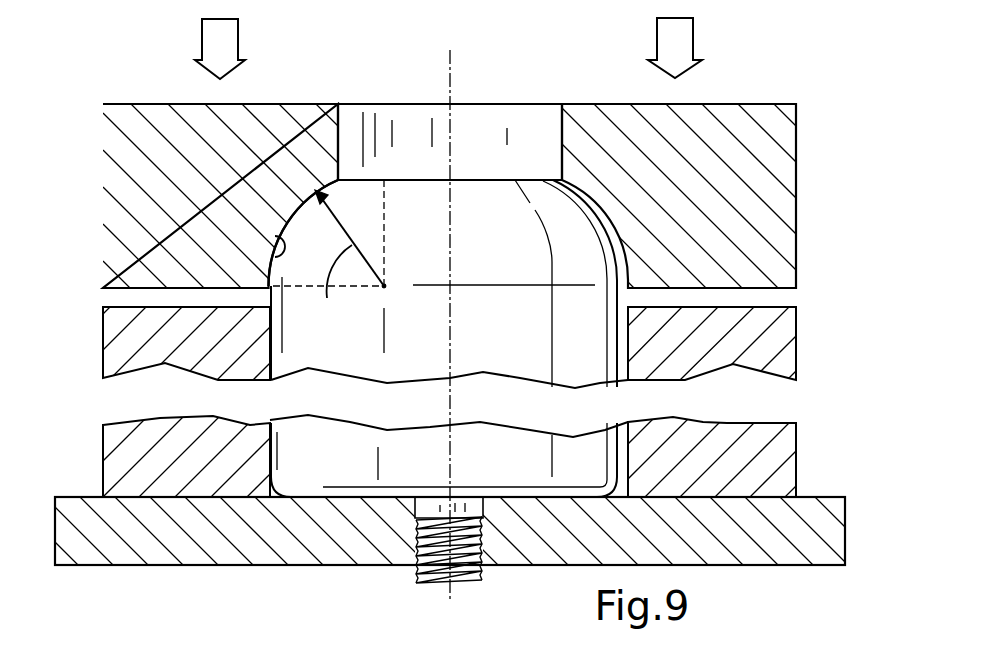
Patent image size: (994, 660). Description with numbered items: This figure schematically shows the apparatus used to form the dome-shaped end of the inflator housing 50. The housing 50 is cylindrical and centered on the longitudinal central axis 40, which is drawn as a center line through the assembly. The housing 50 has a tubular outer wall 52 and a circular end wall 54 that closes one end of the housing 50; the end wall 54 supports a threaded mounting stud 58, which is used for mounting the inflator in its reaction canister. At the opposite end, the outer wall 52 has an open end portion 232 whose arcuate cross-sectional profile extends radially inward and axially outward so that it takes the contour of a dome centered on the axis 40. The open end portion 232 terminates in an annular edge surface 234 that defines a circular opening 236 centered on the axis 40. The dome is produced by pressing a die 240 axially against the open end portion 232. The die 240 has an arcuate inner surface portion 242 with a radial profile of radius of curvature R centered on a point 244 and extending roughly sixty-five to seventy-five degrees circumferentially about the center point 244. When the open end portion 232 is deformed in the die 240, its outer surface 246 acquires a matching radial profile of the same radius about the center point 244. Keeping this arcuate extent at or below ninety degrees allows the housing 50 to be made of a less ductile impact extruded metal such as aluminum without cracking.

The longitudinal central axis 40 is at (450, 68).
The housing 50 is at (279, 362).
The outer wall 52 is at (315, 343).
The end wall 54 is at (333, 500).
The threaded mounting stud 58 is at (427, 573).
The open end portion 232 is at (295, 212).
The annular edge surface 234 is at (480, 172).
The circular opening 236 is at (408, 166).
The die 240 is at (104, 134).
The inner surface portion 242 is at (272, 258).
The center point 244 is at (384, 286).
The outer surface 246 is at (308, 197).